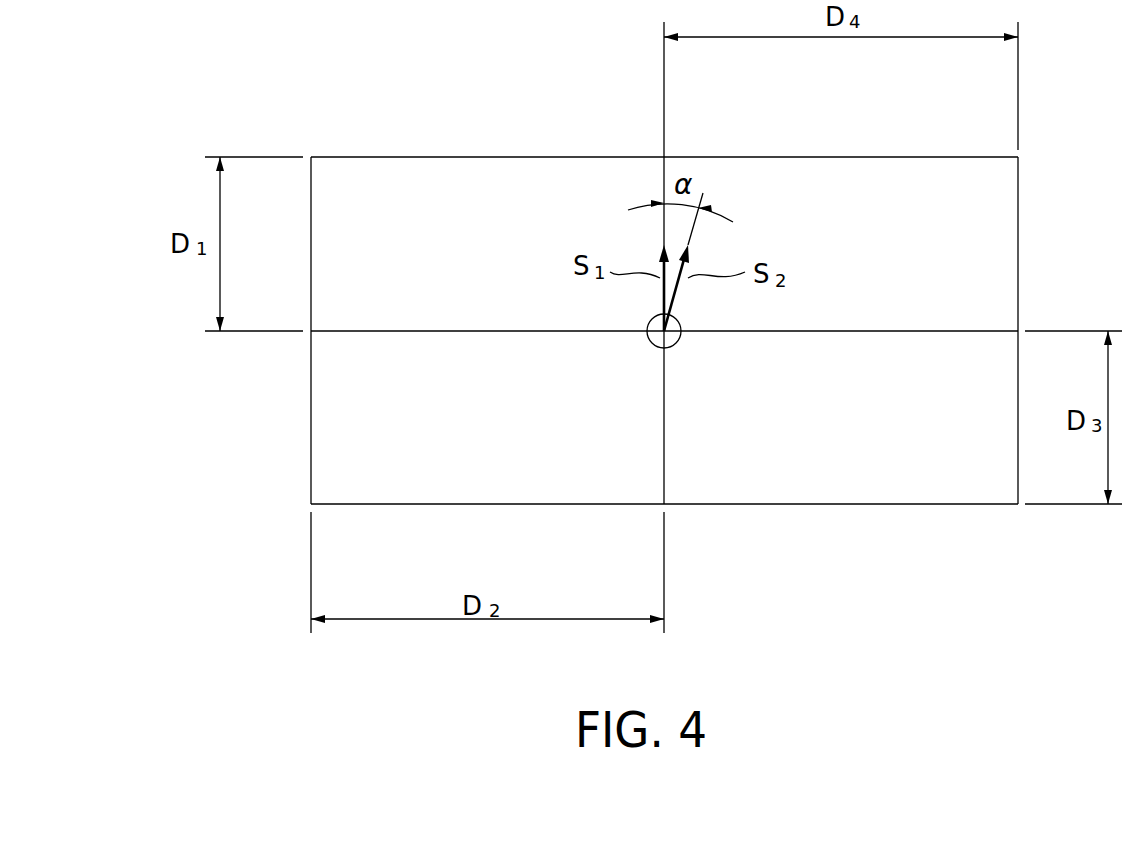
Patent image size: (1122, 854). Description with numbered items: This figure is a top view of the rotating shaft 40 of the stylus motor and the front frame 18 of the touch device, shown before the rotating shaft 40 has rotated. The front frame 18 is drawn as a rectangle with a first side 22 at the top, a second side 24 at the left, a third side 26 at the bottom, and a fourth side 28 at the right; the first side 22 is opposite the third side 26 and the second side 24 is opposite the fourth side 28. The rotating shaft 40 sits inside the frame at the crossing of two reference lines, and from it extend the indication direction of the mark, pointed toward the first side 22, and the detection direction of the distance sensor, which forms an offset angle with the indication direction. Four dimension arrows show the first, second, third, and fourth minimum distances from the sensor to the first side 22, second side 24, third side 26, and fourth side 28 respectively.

The front frame 18 is at (663, 319).
The first side 22 is at (838, 157).
The second side 24 is at (310, 248).
The third side 26 is at (480, 505).
The fourth side 28 is at (1020, 247).
The rotating shaft 40 is at (672, 345).